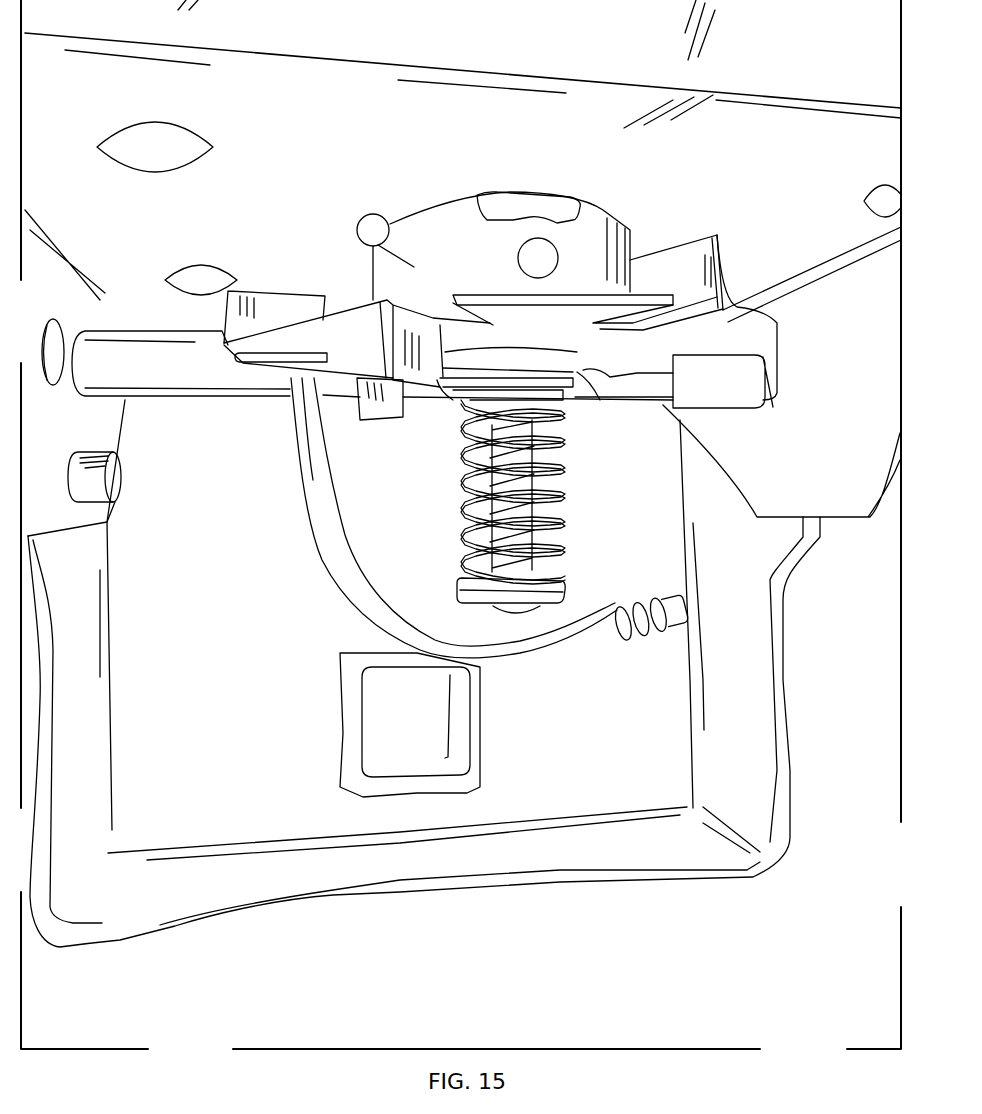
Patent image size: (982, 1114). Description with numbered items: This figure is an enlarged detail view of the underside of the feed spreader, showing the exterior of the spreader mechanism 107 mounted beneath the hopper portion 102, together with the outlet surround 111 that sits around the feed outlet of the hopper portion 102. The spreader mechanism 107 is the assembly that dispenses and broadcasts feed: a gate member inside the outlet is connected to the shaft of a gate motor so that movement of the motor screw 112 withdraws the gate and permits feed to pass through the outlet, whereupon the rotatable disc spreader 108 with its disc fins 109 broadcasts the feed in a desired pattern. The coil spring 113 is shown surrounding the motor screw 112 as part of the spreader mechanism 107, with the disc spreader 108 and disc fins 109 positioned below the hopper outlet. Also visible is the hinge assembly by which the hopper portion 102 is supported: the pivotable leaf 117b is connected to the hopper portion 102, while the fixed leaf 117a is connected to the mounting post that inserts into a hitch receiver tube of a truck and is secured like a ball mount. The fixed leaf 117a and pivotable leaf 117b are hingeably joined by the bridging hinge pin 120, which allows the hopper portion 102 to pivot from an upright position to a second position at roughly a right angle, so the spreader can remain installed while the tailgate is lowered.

The hopper portion 102 is at (471, 31).
The spreader mechanism 107 is at (333, 612).
The disc spreader 108 is at (653, 400).
The disc fins 109 is at (372, 410).
The outlet surround 111 is at (414, 267).
The motor screw 112 is at (565, 480).
The coil spring 113 is at (475, 505).
The fixed leaf 117a is at (204, 591).
The pivotable leaf 117b is at (805, 329).
The hinge pin 120 is at (162, 378).